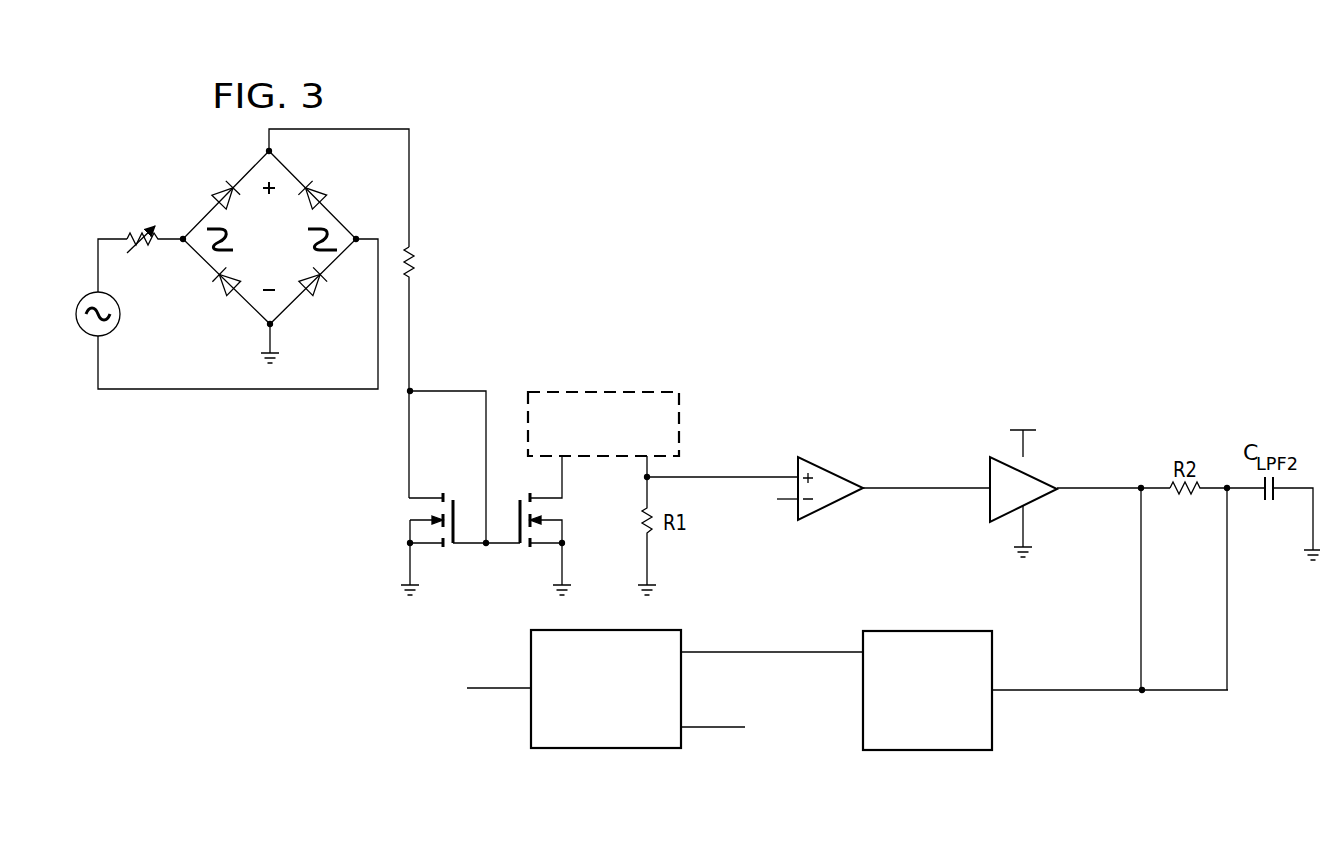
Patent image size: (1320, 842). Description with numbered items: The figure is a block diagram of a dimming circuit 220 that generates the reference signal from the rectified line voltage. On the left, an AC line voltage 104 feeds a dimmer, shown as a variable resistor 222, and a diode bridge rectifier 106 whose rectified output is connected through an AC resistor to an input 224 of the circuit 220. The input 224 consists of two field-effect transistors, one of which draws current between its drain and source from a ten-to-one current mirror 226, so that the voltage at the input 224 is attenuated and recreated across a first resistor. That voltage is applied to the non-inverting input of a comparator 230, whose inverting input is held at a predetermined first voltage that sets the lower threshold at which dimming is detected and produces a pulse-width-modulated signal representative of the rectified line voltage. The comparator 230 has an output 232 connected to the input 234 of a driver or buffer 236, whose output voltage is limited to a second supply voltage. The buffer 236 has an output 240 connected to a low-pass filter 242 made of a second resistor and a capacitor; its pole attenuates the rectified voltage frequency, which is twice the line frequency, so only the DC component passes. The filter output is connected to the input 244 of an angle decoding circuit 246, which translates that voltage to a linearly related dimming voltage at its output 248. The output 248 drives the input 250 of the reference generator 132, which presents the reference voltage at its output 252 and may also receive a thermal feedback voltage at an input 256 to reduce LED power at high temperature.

The line voltage 104 is at (75, 311).
The rectifier bridge 106 is at (206, 321).
The reference generator 132 is at (605, 751).
The circuit 220 is at (247, 598).
The dimmer variable resistor 222 is at (135, 230).
The input 224 is at (474, 488).
The current mirror 226 is at (592, 390).
The comparator 230 is at (832, 468).
The output 232 is at (868, 495).
The input 234 is at (985, 495).
The buffer 236 is at (1030, 470).
The output 240 is at (1091, 494).
The low-pass filter 242 is at (1230, 575).
The input 244 is at (998, 696).
The angle decoding circuit 246 is at (928, 752).
The output 248 is at (858, 656).
The input 250 is at (690, 656).
The output 252 is at (497, 692).
The input 256 is at (712, 733).